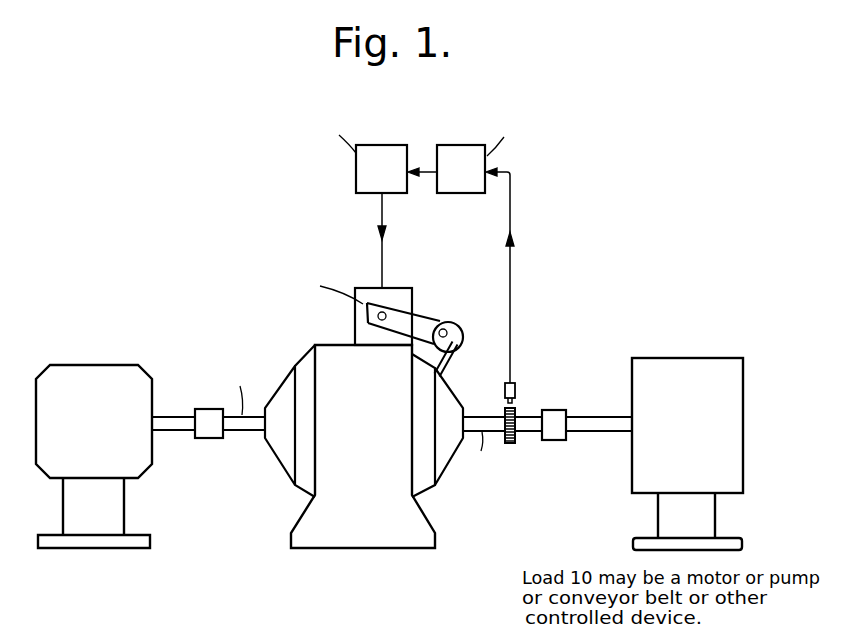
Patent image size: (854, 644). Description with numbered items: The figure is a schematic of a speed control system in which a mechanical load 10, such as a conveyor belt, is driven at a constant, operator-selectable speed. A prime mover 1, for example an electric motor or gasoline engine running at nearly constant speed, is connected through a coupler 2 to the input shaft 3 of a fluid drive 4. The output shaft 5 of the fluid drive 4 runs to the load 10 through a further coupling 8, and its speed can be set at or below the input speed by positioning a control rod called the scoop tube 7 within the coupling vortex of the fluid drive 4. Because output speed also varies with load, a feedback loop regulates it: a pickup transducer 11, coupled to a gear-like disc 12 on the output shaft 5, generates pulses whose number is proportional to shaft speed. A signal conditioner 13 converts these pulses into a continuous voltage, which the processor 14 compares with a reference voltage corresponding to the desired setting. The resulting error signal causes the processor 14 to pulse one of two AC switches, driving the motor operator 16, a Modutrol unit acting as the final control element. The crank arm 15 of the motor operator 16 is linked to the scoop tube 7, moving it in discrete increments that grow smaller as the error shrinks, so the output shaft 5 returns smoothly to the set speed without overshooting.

The prime mover 1 is at (104, 364).
The coupler 2 is at (209, 440).
The input shaft 3 is at (245, 433).
The fluid drive 4 is at (301, 519).
The output shaft 5 is at (489, 417).
The scoop tube 7 is at (458, 352).
The coupling 8 is at (560, 409).
The load 10 is at (691, 358).
The transducer 11 is at (517, 390).
The gear or gearlike disc 12 is at (517, 438).
The signal conditioner 13 is at (457, 194).
The processor 14 is at (371, 195).
The crank arm 15 is at (423, 312).
The motor operator 16 is at (360, 320).